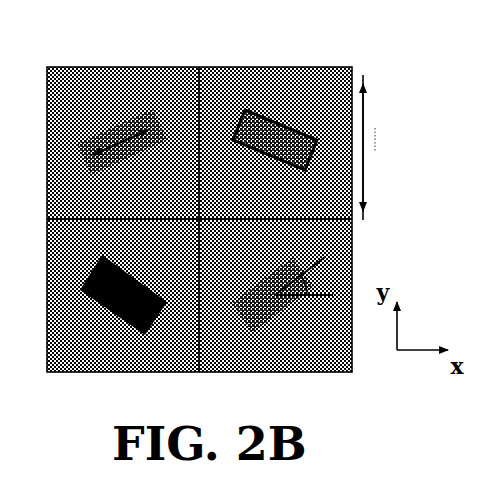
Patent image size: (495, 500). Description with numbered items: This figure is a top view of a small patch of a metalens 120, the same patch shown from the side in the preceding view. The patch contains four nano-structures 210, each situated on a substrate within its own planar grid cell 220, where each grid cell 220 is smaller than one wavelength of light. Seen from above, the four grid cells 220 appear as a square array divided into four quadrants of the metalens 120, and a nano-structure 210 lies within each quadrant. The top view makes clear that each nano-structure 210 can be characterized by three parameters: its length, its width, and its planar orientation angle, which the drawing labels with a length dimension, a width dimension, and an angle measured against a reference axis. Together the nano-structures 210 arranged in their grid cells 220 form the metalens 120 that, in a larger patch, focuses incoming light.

The metalens 120 is at (322, 67).
The nano-structures 210 is at (320, 197).
The planar grid cell 220 is at (237, 111).